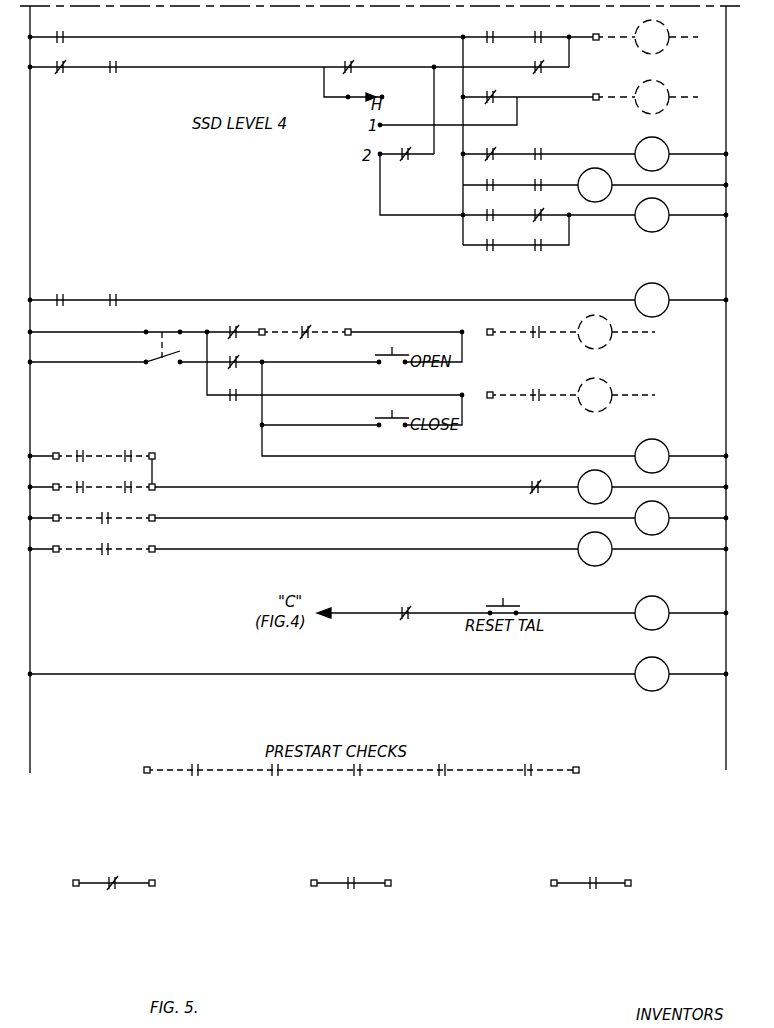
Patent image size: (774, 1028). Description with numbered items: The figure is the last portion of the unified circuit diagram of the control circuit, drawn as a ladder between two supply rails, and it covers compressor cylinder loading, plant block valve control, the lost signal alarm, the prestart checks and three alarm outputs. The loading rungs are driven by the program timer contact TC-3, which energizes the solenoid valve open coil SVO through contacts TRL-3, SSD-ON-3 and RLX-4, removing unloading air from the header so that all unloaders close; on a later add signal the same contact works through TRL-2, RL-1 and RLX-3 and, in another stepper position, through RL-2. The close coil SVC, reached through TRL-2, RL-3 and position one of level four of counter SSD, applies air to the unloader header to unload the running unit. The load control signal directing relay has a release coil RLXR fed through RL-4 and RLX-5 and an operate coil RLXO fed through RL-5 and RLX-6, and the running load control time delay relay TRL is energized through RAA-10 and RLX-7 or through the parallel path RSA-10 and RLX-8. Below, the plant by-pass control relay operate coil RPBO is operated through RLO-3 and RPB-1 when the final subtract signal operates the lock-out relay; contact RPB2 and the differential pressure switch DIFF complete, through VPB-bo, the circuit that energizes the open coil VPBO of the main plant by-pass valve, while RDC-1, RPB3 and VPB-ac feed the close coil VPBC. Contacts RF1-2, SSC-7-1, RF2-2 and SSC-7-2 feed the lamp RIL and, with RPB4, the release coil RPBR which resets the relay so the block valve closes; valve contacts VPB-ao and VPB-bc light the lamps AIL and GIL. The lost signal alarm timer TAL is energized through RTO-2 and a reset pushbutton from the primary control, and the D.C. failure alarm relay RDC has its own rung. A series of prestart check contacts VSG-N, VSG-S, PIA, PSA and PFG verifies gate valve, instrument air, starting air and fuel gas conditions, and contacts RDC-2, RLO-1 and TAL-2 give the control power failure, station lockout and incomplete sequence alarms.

The running load control time delay relay contact TRL-2 is at (66, 44).
The running load control time delay relay contact TRL-3 is at (59, 74).
The signal direction scanning program timer contact TC-3 is at (115, 74).
The running totalizing scanning stepper contact SSD-ON-3 is at (363, 74).
The load control solenoid reversing relay contact RL-1 is at (486, 44).
The load control signal directing relay contact RLX-3 is at (539, 44).
The load control signal directing relay contact RLX-4 is at (539, 74).
The load control solenoid reversing relay contact RL-3 is at (486, 104).
The load control solenoid reversing relay contact RL-2 is at (404, 161).
The load control solenoid reversing relay contact RL-4 is at (484, 161).
The load control signal directing relay contact RLX-5 is at (539, 162).
The load control solenoid reversing relay contact RL-5 is at (484, 192).
The load control signal directing relay contact RLX-6 is at (539, 192).
The starting control relay contact RAA-10 is at (491, 222).
The load control signal directing relay contact RLX-7 is at (541, 222).
The stopping control relay contact RSA-10 is at (483, 252).
The load control signal directing relay contact RLX-8 is at (543, 252).
The solenoid valve open coil SVO is at (652, 37).
The solenoid valve close coil SVC is at (652, 97).
The load control signal directing relay release coil RLXR is at (652, 154).
The load control signal directing relay operate coil RLXO is at (595, 185).
The running load control time delay relay TRL is at (652, 215).
The low-end sequence station lock-out relay contact RLO-3 is at (59, 307).
The plant by-pass control relay contact RPB-1 is at (119, 307).
The plant by-pass control relay contact RPB2 is at (228, 339).
The differential pressure switch DIFF is at (314, 339).
The D.C. failure alarm relay contact RDC-1 is at (234, 369).
The plant by-pass control relay contact RPB3 is at (224, 402).
The main plant by-pass valve limit contact VPB-bo is at (535, 340).
The main plant by-pass valve limit contact VPB-ac is at (530, 403).
The relay contact RF1-2 is at (84, 463).
The scanning stepper contact SSC-7-1 is at (146, 449).
The relay contact RF2-2 is at (79, 494).
The scanning stepper contact SSC-7-2 is at (146, 494).
The main plant by-pass valve limit contact VPB-ao is at (109, 525).
The main plant by-pass valve limit contact VPB-bc is at (103, 556).
The plant by-pass control relay contact RPB4 is at (530, 494).
The plant by-pass control relay release coil RPBR is at (652, 300).
The main plant by-pass valve open coil VPBO is at (595, 332).
The main plant by-pass valve close coil VPBC is at (595, 395).
The red indicating lamp RIL is at (652, 456).
The plant by-pass control relay operate coil RPBO is at (595, 487).
The amber indicating lamp AIL is at (652, 518).
The green indicating lamp GIL is at (595, 549).
The primary control reset relay contact RTO-2 is at (396, 620).
The lost signal alarm time delay relay TAL is at (652, 613).
The D.C. failure alarm relay RDC is at (652, 674).
The plant side gate valve contact VSG-N is at (188, 785).
The plant side gate valve contact VSG-S is at (275, 785).
The instrument air pressure switch PIA is at (362, 792).
The starting air pressure switch PSA is at (448, 792).
The fuel gas pressure switch PFG is at (541, 792).
The D.C. failure alarm relay contact RDC-2 is at (127, 909).
The low-end sequence station lock-out relay contact RLO-1 is at (354, 909).
The lost signal alarm time delay relay contact TAL-2 is at (595, 918).